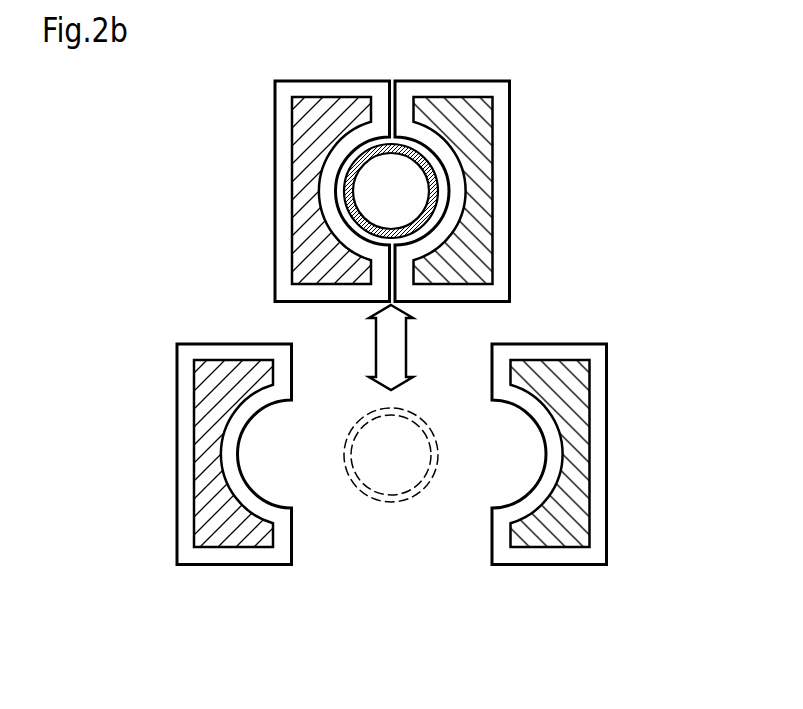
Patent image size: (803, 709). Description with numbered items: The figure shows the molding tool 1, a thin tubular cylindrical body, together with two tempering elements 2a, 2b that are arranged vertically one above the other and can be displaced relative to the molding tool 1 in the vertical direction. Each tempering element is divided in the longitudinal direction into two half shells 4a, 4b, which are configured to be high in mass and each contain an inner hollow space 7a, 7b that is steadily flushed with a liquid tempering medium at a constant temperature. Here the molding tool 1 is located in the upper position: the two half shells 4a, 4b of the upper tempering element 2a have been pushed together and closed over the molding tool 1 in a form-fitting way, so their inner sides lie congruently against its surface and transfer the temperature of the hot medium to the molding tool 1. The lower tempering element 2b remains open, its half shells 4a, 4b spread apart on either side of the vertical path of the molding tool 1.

The molding tool 1 is at (438, 185).
The upper tempering element 2a is at (503, 44).
The lower tempering element 2b is at (655, 517).
The first half shell 4a is at (276, 134).
The second half shell 4b is at (498, 242).
The first inner hollow space 7a is at (473, 130).
The second inner hollow space 7b is at (573, 393).